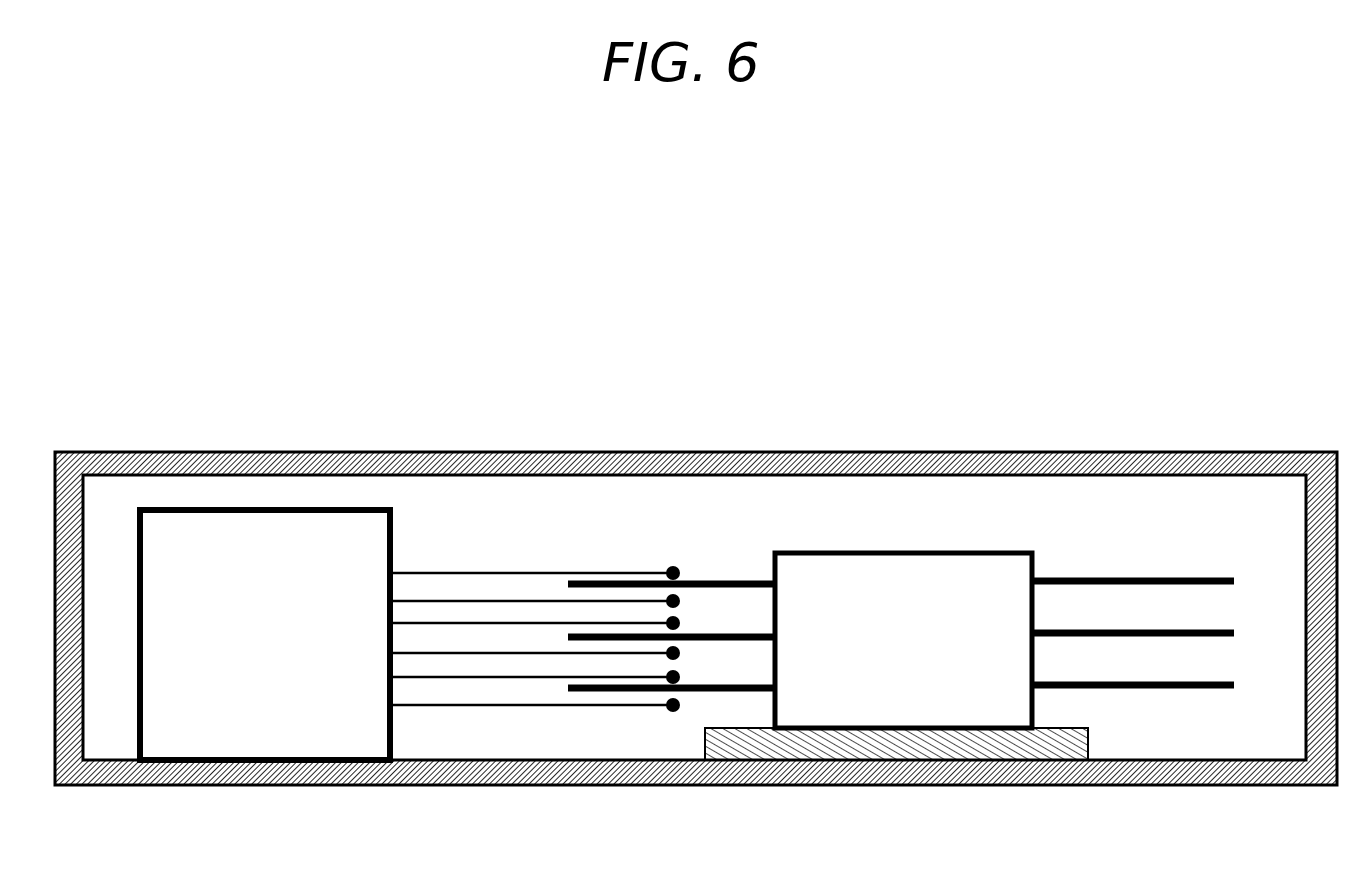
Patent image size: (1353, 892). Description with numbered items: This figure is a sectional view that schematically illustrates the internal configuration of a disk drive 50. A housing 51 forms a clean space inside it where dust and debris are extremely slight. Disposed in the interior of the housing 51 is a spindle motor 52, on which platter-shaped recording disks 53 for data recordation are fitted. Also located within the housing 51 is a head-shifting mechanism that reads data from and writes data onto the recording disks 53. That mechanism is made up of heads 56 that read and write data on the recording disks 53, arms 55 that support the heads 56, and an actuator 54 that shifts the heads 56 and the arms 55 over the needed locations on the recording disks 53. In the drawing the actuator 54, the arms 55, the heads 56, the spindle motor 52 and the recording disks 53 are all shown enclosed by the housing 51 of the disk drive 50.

The disk drive 50 is at (638, 277).
The housing 51 is at (1046, 452).
The spindle motor 52 is at (868, 582).
The recording disks 53 is at (1136, 627).
The actuator 54 is at (210, 543).
The arms 55 is at (471, 600).
The heads 56 is at (684, 584).